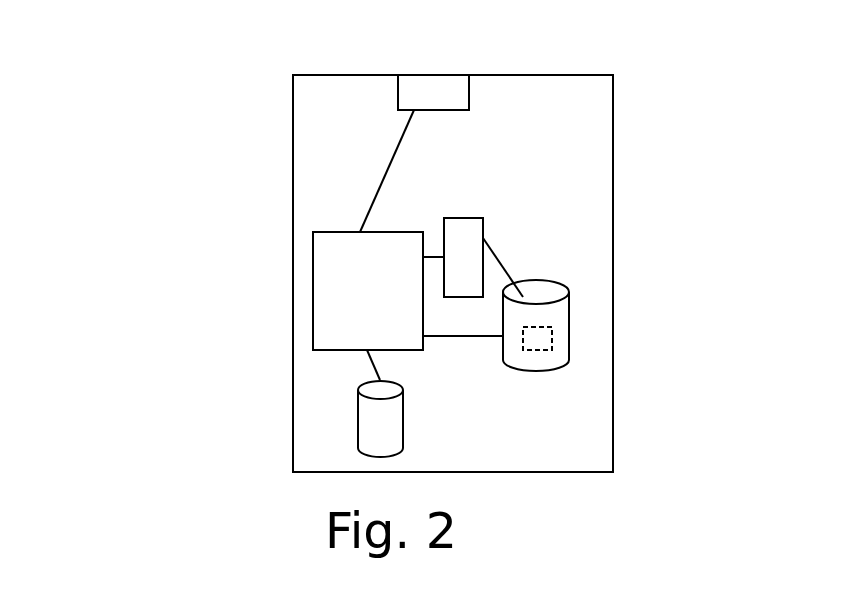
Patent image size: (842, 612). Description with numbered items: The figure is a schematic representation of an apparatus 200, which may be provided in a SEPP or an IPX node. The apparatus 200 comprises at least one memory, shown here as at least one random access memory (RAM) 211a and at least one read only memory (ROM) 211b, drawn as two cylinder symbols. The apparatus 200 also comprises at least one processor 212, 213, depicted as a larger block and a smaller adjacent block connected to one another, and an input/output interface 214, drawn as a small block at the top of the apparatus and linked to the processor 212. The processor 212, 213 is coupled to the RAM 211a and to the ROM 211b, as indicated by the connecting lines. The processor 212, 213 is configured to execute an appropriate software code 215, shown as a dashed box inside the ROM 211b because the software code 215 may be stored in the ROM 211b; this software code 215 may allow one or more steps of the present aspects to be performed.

The apparatus 200 is at (274, 68).
The input/output interface 214 is at (440, 92).
The processor 213 is at (455, 237).
The processor 212 is at (313, 316).
The random access memory (RAM) 211a is at (355, 417).
The read only memory (ROM) 211b is at (568, 358).
The software code 215 is at (551, 329).